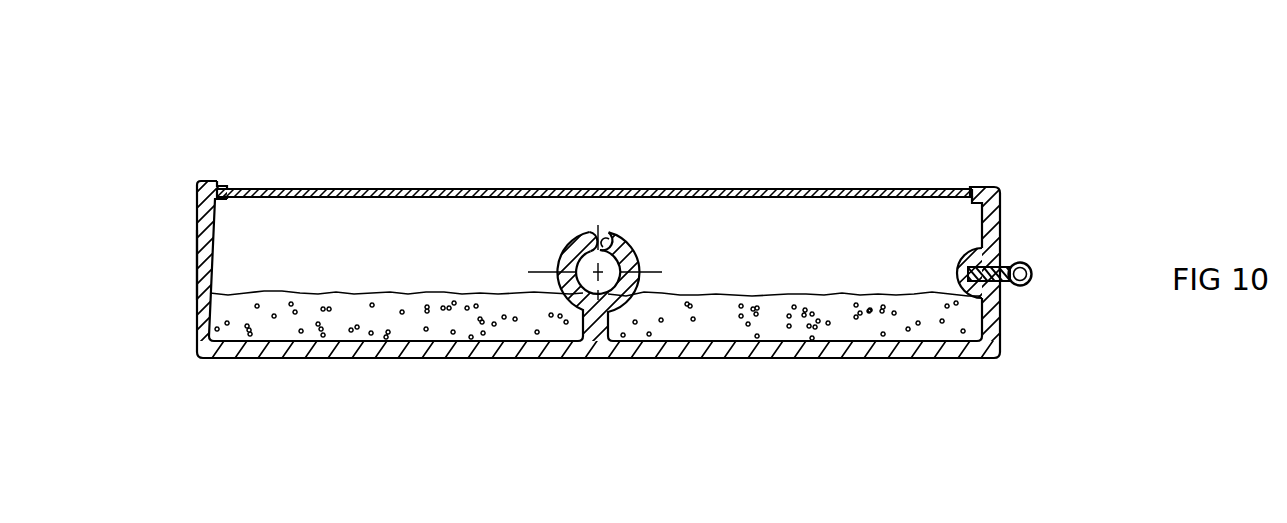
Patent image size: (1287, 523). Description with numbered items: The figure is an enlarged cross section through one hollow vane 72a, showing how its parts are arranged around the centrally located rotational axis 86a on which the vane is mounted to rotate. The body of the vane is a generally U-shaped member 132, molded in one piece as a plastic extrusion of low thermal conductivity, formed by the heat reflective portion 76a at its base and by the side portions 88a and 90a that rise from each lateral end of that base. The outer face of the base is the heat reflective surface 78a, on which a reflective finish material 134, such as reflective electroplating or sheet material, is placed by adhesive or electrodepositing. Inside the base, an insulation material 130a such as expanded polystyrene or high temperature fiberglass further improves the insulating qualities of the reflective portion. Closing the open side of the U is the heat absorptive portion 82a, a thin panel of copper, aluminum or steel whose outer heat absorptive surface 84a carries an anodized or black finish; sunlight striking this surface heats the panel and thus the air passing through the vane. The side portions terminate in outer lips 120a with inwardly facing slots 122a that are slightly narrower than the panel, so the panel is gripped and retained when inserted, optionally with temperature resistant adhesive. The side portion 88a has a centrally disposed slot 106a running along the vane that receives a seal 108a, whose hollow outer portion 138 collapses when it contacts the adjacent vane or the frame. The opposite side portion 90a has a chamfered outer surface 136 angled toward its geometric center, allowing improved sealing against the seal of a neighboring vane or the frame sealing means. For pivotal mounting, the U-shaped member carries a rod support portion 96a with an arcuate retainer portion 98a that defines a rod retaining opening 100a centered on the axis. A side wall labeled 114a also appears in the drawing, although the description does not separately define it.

The hollow vane 72a is at (968, 137).
The heat reflective portion 76a is at (870, 353).
The heat reflective surface 78a is at (913, 363).
The heat absorptive portion 82a is at (710, 192).
The heat absorptive surface 84a is at (750, 192).
The rotational axis 86a is at (622, 240).
The side portion 88a is at (1003, 320).
The side portion 90a is at (197, 322).
The rod support portion 96a is at (563, 246).
The arcuate retainer portion 98a is at (585, 236).
The rod retaining opening 100a is at (603, 240).
The slot 106a is at (1003, 265).
The seal 108a is at (1032, 268).
The left side wall 114a is at (198, 217).
The outer lip 120a is at (209, 183).
The inwardly facing slot 122a is at (225, 183).
The insulation material 130a is at (383, 322).
The U-shaped member 132 is at (196, 337).
The reflective finish material 134 is at (950, 363).
The chamfered outer surface 136 is at (195, 267).
The hollow outer portion 138 is at (1032, 287).